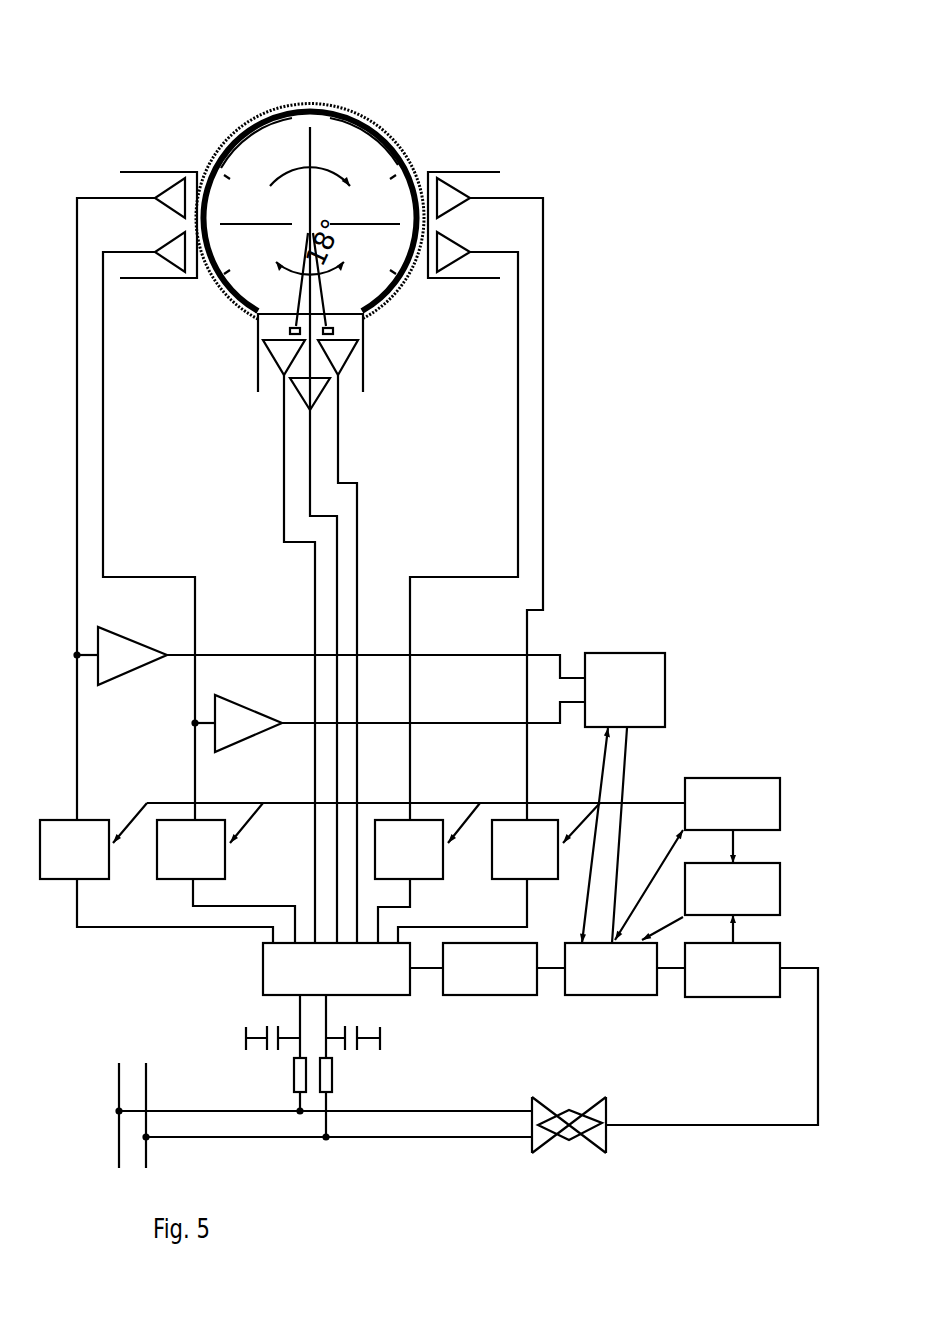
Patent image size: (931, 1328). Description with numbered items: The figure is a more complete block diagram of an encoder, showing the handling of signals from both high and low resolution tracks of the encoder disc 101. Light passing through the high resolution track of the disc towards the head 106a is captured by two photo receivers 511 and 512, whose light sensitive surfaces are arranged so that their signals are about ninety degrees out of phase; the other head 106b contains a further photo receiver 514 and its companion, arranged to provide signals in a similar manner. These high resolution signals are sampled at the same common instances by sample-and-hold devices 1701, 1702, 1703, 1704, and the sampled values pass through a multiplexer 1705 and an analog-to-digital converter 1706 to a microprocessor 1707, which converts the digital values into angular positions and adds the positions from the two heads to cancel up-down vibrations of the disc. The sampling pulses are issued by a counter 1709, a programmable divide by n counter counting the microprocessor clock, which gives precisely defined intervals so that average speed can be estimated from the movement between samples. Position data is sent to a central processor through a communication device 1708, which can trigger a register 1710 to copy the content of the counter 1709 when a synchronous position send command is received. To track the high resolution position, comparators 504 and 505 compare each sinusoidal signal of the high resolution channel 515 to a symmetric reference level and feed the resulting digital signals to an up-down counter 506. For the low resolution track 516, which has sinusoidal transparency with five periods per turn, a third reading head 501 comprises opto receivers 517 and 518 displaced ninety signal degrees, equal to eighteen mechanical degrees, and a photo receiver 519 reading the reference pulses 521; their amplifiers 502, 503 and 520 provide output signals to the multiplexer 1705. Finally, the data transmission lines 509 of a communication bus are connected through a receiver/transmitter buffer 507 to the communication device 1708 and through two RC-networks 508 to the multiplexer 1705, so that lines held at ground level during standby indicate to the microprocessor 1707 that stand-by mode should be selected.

The encoder disc 101 is at (314, 104).
The head 106a is at (120, 163).
The head 106b is at (515, 164).
The third reading head 501 is at (258, 400).
The amplifier 502 is at (346, 363).
The amplifier 503 is at (266, 364).
The comparator 504 is at (139, 669).
The comparator 505 is at (267, 731).
The up-down counter 506 is at (628, 653).
The receiver/transmitter buffer 507 is at (570, 1110).
The RC-network 508 is at (335, 1050).
The data transmission lines 509 is at (134, 1076).
The photo receiver 511 is at (162, 186).
The photo receiver 512 is at (165, 268).
The photo receiver 514 is at (462, 272).
The high resolution channel 515 is at (372, 114).
The track 516 is at (292, 106).
The opto receiver 517 is at (258, 332).
The opto receiver 518 is at (364, 333).
The photo receiver 519 is at (340, 372).
The amplifier 520 is at (318, 410).
The reference pulse 521 is at (340, 135).
The sample-and-hold device 1701 is at (85, 885).
The sample-and-hold device 1702 is at (203, 885).
The sample-and-hold device 1703 is at (420, 885).
The sample-and-hold device 1704 is at (541, 818).
The multiplexer 1705 is at (377, 1003).
The analog-to-digital converter 1706 is at (477, 1003).
The microprocessor 1707 is at (597, 1003).
The communication device 1708 is at (717, 1000).
The counter 1709 is at (758, 772).
The register 1710 is at (760, 858).